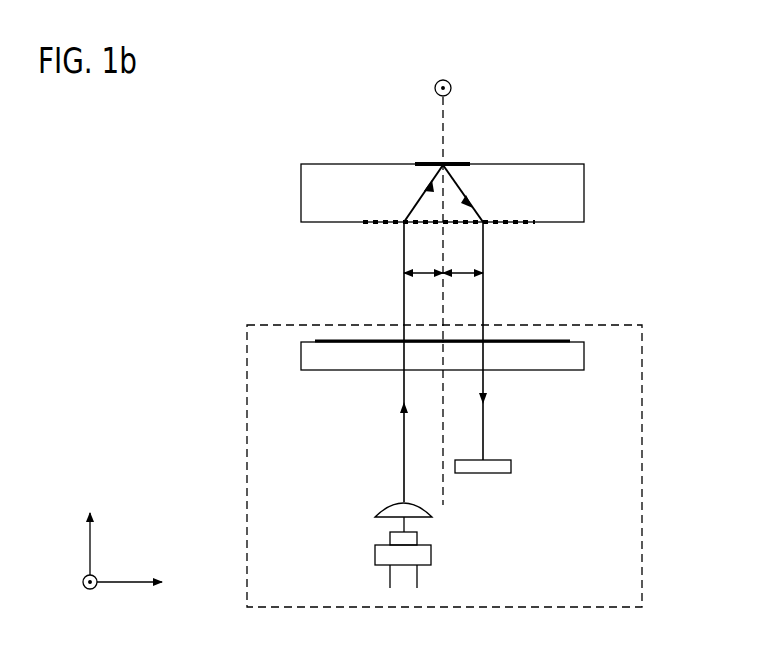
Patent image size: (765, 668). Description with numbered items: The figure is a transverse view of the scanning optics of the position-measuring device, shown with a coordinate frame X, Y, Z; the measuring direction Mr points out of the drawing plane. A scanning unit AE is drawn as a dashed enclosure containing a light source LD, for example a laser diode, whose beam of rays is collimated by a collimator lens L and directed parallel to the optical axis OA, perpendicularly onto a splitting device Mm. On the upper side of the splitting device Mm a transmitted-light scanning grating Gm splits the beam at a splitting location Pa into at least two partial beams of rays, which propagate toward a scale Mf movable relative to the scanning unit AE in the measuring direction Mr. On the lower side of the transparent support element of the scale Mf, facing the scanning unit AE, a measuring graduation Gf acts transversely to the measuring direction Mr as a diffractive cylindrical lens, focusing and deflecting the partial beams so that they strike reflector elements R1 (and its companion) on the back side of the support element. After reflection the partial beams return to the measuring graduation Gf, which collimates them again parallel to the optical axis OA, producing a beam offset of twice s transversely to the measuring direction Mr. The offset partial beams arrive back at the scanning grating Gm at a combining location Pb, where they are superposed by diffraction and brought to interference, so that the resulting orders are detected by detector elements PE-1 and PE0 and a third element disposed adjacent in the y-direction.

The optical axis OA is at (443, 117).
The measuring direction Mr is at (439, 71).
The scale Mf is at (513, 170).
The reflector element R1 is at (396, 132).
The measuring graduation Gf is at (537, 223).
The splitting location Pa is at (403, 338).
The combining location Pb is at (485, 338).
The beam offset s is at (443, 262).
The scanning unit AE is at (643, 530).
The transmitted-light scanning grating Gm is at (335, 338).
The splitting device Mm is at (320, 363).
The detector element PE-1 is at (533, 492).
The detector element PE0 is at (483, 466).
The collimator lens L is at (375, 517).
The light source LD is at (432, 558).
The X axis X is at (81, 595).
The Y axis Y is at (131, 598).
The center Z is at (78, 544).